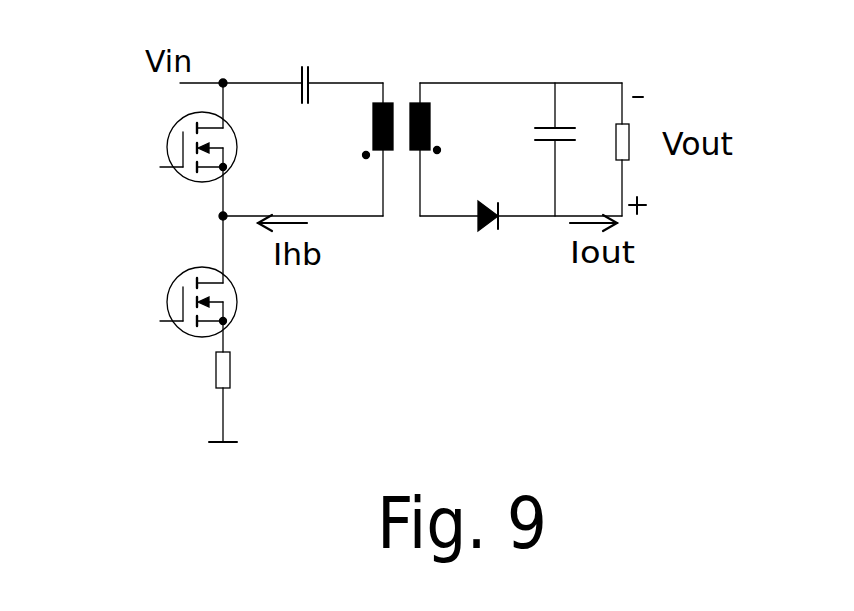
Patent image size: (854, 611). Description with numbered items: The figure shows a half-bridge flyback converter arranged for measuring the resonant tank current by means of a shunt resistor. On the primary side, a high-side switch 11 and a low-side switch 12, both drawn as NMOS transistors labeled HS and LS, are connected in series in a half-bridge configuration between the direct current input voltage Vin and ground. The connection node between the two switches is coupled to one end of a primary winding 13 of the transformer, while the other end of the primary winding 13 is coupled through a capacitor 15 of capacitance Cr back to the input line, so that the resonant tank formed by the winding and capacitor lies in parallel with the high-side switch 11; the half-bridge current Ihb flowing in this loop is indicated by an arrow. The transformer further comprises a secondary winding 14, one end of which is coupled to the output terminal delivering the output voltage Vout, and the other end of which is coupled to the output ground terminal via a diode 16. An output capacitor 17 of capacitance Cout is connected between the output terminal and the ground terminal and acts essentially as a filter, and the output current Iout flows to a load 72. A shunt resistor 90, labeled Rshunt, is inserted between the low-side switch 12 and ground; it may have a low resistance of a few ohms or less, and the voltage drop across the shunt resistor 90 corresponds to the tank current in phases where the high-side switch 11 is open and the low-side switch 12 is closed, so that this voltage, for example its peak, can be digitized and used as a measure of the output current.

The high-side switch 11 is at (180, 122).
The low-side switch 12 is at (167, 287).
The primary winding 13 is at (387, 103).
The secondary winding 14 is at (432, 122).
The capacitor 15 is at (299, 66).
The diode 16 is at (478, 204).
The output capacitor 17 is at (571, 129).
The load 72 is at (628, 137).
The shunt resistor 90 is at (216, 375).